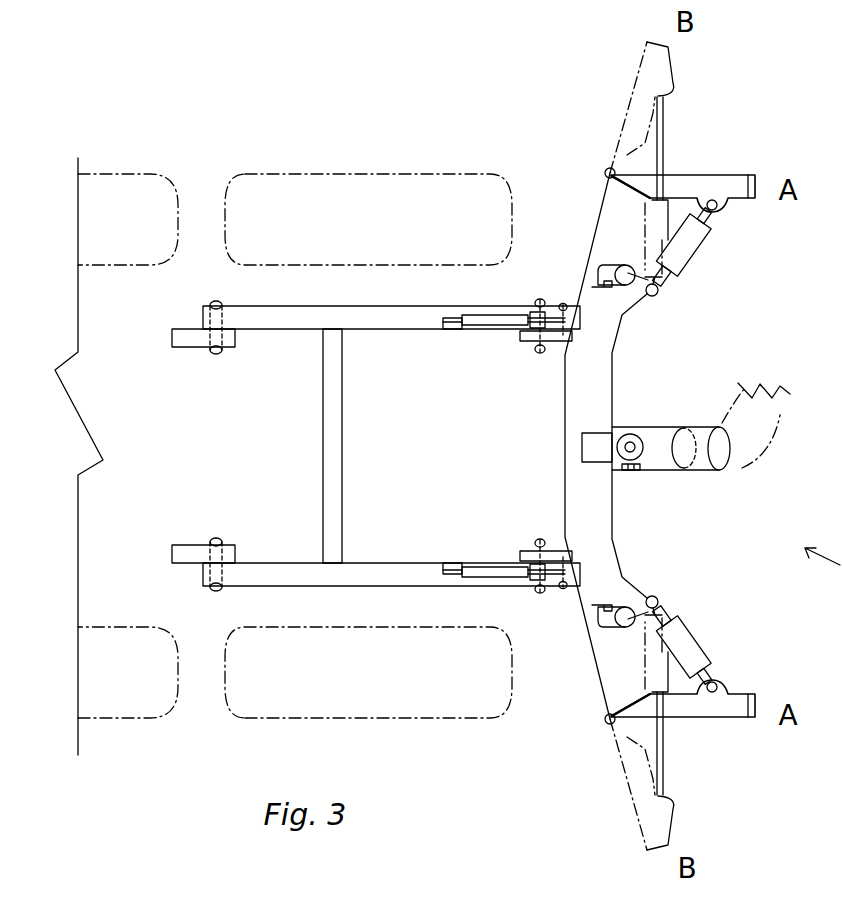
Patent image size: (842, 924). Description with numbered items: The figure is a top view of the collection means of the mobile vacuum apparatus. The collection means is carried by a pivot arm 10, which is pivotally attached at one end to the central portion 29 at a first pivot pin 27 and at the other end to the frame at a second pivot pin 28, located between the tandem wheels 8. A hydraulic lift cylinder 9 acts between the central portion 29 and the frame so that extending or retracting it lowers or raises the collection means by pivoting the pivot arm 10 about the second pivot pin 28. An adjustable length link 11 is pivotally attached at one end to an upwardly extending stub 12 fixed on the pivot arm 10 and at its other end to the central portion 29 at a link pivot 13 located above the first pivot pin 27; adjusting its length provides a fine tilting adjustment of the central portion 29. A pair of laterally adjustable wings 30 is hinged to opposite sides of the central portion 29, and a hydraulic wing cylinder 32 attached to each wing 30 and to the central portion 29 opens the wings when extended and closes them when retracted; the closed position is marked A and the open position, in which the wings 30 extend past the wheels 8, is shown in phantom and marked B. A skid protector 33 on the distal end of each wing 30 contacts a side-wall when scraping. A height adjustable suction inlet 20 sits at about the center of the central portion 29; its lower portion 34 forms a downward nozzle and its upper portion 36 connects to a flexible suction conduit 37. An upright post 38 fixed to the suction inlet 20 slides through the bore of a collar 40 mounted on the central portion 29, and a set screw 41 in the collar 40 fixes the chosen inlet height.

The tandem wheels 8 is at (152, 245).
The hydraulic lift cylinder 9 is at (612, 268).
The pivot arm 10 is at (292, 320).
The adjustable length link 11 is at (495, 322).
The upwardly extending stub 12 is at (448, 322).
The link pivot 13 is at (563, 323).
The height adjustable suction inlet 20 is at (656, 455).
The first pivot pin 27 is at (538, 330).
The second pivot pin 28 is at (222, 340).
The central portion 29 is at (577, 385).
The laterally adjustable wings 30 is at (648, 75).
The hydraulic wing cylinder 32 is at (652, 244).
The skid protector 33 is at (755, 200).
The lower portion 34 is at (653, 437).
The upper portion 36 is at (687, 443).
The flexible suction conduit 37 is at (762, 432).
The upright post 38 is at (636, 435).
The collar 40 is at (642, 450).
The set screw 41 is at (633, 463).